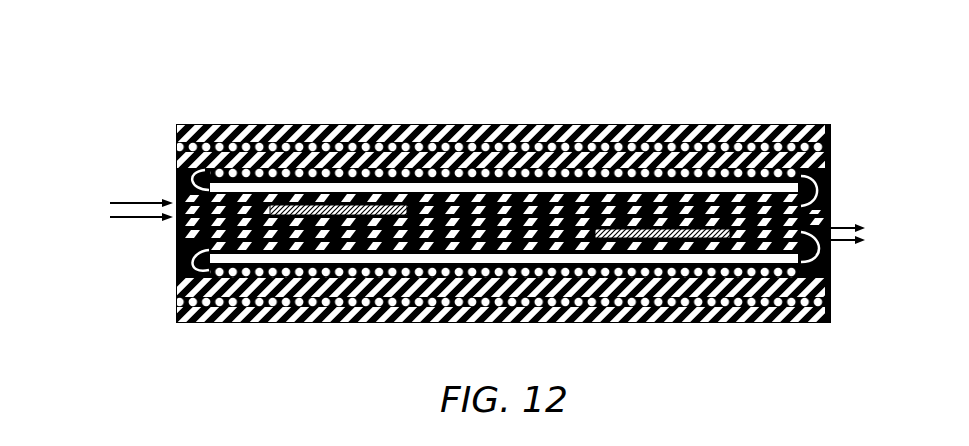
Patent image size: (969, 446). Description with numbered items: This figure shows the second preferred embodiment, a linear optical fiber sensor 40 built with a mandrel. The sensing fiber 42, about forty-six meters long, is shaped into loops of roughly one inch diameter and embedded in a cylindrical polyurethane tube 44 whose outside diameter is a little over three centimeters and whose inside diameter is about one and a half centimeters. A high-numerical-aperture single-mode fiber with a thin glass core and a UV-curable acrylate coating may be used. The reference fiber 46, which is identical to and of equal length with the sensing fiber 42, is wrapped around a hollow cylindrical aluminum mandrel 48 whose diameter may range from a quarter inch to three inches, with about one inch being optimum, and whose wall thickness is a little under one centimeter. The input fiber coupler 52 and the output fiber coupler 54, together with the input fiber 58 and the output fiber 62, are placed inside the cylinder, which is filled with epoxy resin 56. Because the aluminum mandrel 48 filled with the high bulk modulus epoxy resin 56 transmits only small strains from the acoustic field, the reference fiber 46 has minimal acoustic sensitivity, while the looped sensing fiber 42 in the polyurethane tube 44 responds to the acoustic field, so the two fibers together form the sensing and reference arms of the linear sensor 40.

The linear optical fiber sensor 40 is at (460, 94).
The sensing fiber 42 is at (177, 148).
The tube 44 is at (832, 136).
The reference fiber 46 is at (177, 180).
The mandrel 48 is at (177, 191).
The input fiber coupler 52 is at (352, 208).
The output fiber coupler 54 is at (698, 237).
The epoxy resin 56 is at (832, 254).
The input fiber 58 is at (103, 208).
The output fiber 62 is at (862, 232).